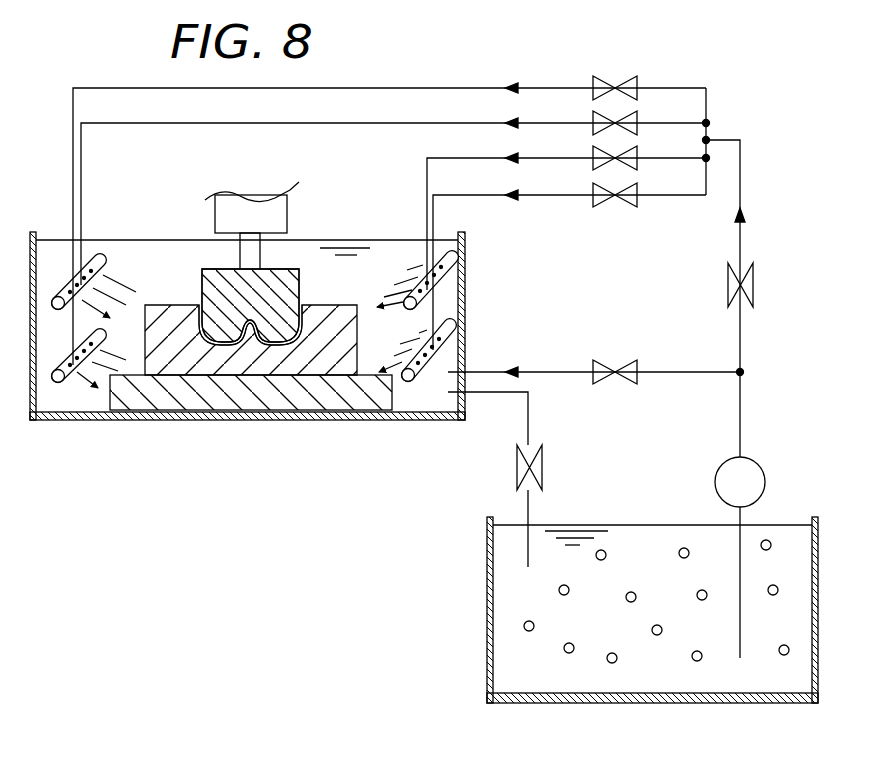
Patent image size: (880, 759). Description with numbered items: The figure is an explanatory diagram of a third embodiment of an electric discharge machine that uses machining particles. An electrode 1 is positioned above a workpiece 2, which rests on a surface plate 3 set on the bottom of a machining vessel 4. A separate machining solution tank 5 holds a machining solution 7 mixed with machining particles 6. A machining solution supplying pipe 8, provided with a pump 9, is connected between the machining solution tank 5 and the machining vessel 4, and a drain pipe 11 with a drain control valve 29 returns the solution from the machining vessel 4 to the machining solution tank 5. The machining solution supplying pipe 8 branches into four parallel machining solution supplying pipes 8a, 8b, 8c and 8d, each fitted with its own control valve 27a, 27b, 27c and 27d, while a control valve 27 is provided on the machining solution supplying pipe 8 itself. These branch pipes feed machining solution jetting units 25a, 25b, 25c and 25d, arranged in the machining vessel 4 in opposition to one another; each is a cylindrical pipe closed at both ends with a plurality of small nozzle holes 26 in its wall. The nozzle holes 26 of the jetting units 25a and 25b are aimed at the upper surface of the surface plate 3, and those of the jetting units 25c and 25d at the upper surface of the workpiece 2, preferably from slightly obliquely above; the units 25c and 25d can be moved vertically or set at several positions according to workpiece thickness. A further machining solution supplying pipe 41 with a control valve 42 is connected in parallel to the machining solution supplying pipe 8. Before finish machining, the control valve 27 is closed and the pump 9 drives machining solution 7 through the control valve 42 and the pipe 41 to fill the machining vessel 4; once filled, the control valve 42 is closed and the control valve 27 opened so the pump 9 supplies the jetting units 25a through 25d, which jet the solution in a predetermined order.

The electrode 1 is at (212, 288).
The workpiece 2 is at (328, 370).
The surface plate 3 is at (292, 385).
The machining vessel 4 is at (207, 412).
The machining solution tank 5 is at (696, 703).
The machining particles 6 is at (611, 664).
The machining solution 7 is at (651, 553).
The machining solution supplying pipe 8 is at (742, 177).
The machining solution supplying pipe 8a is at (523, 197).
The machining solution supplying pipe 8b is at (455, 85).
The machining solution supplying pipe 8c is at (487, 160).
The machining solution supplying pipe 8d is at (486, 120).
The pump 9 is at (765, 480).
The drain pipe 11 is at (482, 395).
The machining solution jetting unit 25a is at (425, 382).
The machining solution jetting unit 25b is at (57, 383).
The machining solution jetting unit 25c is at (412, 258).
The machining solution jetting unit 25d is at (98, 258).
The nozzle holes 26 is at (106, 260).
The control valve 27 is at (753, 272).
The control valve 27a is at (626, 207).
The control valve 27b is at (619, 76).
The control valve 27c is at (593, 165).
The control valve 27d is at (595, 122).
The drain control valve 29 is at (540, 452).
The machining solution supplying pipe 41 is at (549, 370).
The control valve 42 is at (613, 360).